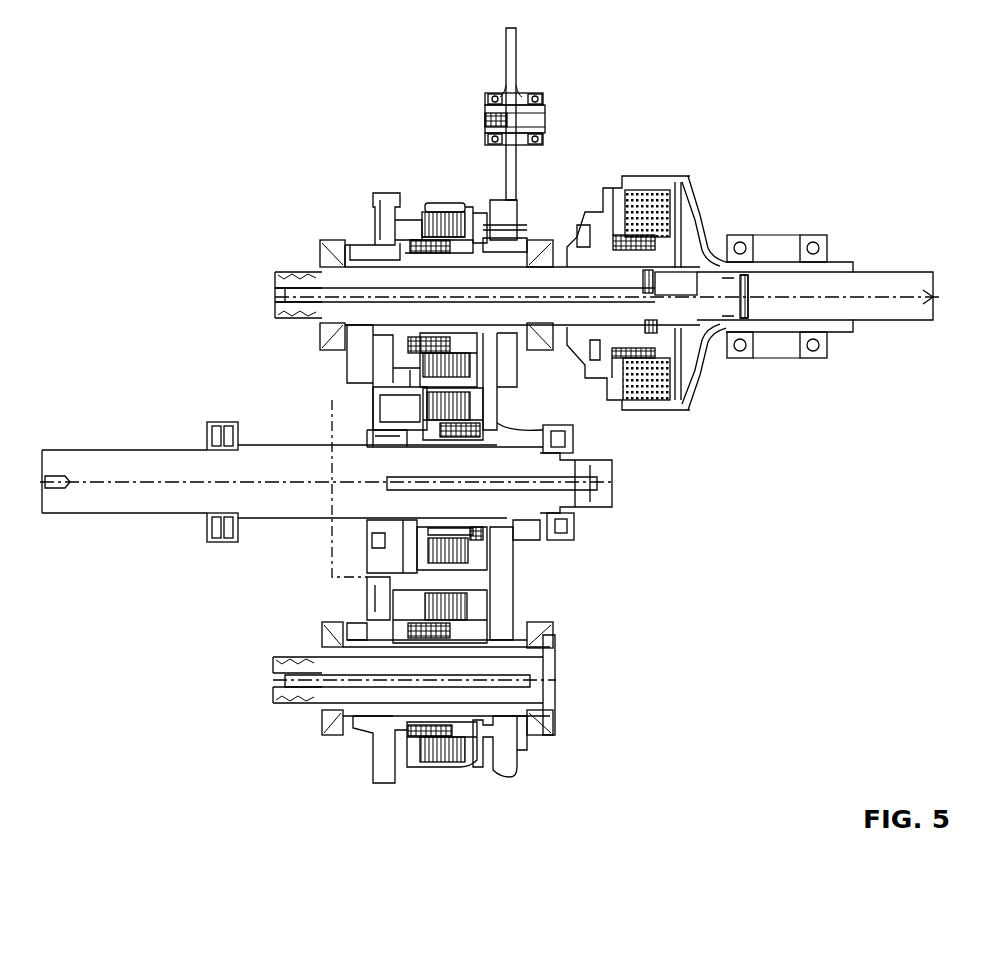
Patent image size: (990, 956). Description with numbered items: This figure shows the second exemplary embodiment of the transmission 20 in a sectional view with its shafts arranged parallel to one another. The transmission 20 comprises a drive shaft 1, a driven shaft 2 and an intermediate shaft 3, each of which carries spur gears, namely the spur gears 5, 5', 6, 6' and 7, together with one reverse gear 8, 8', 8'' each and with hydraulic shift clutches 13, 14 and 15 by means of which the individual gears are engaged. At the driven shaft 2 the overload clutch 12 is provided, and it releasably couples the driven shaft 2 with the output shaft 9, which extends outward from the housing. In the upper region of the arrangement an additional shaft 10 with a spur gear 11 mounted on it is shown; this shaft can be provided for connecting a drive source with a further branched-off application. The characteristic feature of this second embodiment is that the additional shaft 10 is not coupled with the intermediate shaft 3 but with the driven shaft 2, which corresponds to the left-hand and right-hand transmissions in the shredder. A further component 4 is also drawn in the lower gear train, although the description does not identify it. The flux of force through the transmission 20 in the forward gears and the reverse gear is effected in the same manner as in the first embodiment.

The drive shaft 1 is at (105, 500).
The driven shaft 2 is at (343, 282).
The intermediate shaft 3 is at (357, 690).
The bracket 4 is at (383, 612).
The spur gear 5 is at (361, 193).
The spur gear 5' is at (536, 411).
The spur gear 6 is at (350, 417).
The spur gear 6' is at (500, 616).
The spur gear 7 is at (520, 222).
The reverse gear 8 is at (441, 192).
The reverse gear 8' is at (382, 410).
The reverse gear 8'' is at (498, 772).
The output shaft 9 is at (865, 285).
The additional shaft 10 is at (540, 113).
The spur gear 11 is at (508, 62).
The overload clutch 12 is at (655, 195).
The hydraulic shift clutch 13 is at (453, 550).
The hydraulic shift clutch 14 is at (447, 745).
The hydraulic shift clutch 15 is at (435, 360).
The transmission 20 is at (840, 150).